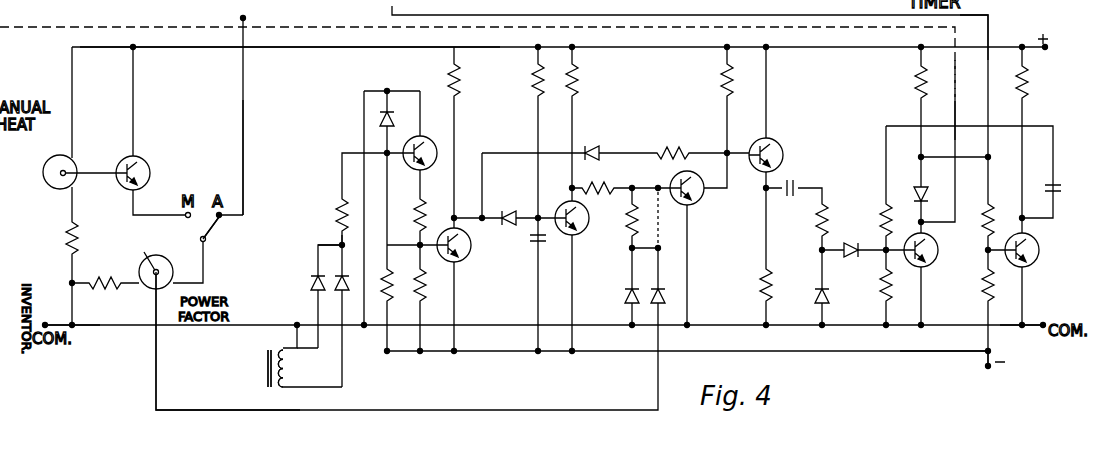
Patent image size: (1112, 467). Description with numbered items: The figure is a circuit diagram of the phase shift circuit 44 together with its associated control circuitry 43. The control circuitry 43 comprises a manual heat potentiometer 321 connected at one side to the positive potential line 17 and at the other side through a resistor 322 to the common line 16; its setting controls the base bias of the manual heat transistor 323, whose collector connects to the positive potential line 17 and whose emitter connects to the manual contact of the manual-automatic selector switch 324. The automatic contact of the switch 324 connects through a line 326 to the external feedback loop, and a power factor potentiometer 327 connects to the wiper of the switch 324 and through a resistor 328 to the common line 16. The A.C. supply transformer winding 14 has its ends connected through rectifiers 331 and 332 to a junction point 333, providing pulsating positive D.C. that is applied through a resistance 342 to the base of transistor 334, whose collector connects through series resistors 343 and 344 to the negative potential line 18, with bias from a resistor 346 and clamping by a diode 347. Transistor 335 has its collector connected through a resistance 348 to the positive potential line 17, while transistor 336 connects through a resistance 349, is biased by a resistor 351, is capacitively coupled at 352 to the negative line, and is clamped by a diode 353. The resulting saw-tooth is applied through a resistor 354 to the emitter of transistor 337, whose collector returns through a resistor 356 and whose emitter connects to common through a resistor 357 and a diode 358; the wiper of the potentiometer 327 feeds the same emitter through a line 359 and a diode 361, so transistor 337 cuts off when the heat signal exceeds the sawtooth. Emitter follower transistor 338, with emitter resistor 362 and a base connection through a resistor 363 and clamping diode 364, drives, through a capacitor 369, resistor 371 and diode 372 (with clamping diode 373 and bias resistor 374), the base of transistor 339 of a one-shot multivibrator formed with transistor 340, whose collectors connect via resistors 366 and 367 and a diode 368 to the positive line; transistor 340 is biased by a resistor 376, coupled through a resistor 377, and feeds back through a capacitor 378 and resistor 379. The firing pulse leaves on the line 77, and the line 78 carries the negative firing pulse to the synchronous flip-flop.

The A.C. supply transformer winding 14 is at (268, 382).
The common line 16 is at (92, 331).
The positive potential line 17 is at (122, 47).
The negative potential line 18 is at (948, 352).
The control circuitry 43 is at (62, 100).
The phase shift circuit 44 is at (349, 90).
The line 77 is at (955, 102).
The line 78 is at (989, 35).
The manual heat potentiometer 321 is at (58, 160).
The resistor 322 is at (67, 227).
The manual heat transistor 323 is at (144, 163).
The manual-automatic selector switch 324 is at (220, 239).
The line 326 is at (243, 137).
The power factor potentiometer 327 is at (181, 265).
The resistor 328 is at (122, 268).
The rectifier 331 is at (309, 281).
The rectifier 332 is at (340, 289).
The junction point 333 is at (341, 244).
The transistor 334 is at (428, 140).
The transistor 335 is at (458, 262).
The transistor 336 is at (573, 234).
The transistor 337 is at (674, 174).
The transistor 338 is at (772, 140).
The transistor 339 is at (938, 245).
The transistor 340 is at (1039, 245).
The resistance 342 is at (338, 206).
The resistor 343 is at (420, 210).
The resistor 344 is at (425, 290).
The resistor 346 is at (400, 274).
The diode 347 is at (380, 120).
The resistance 348 is at (453, 72).
The resistance 349 is at (582, 71).
The resistor 351 is at (536, 89).
The capacitor 352 is at (535, 247).
The diode 353 is at (525, 209).
The resistor 354 is at (615, 176).
The resistor 356 is at (722, 76).
The resistor 357 is at (630, 211).
The diode 358 is at (626, 306).
The line 359 is at (155, 402).
The diode 361 is at (661, 302).
The resistor 362 is at (755, 279).
The resistor 363 is at (692, 144).
The clamping diode 364 is at (608, 148).
The resistor 366 is at (920, 75).
The resistor 367 is at (1030, 100).
The diode 368 is at (913, 178).
The capacitor 369 is at (793, 189).
The resistor 371 is at (826, 222).
The diode 372 is at (829, 260).
The clamping diode 373 is at (817, 309).
The resistor 374 is at (878, 303).
The resistor 376 is at (983, 306).
The resistor 377 is at (980, 202).
The capacitor 378 is at (1056, 184).
The resistor 379 is at (885, 203).